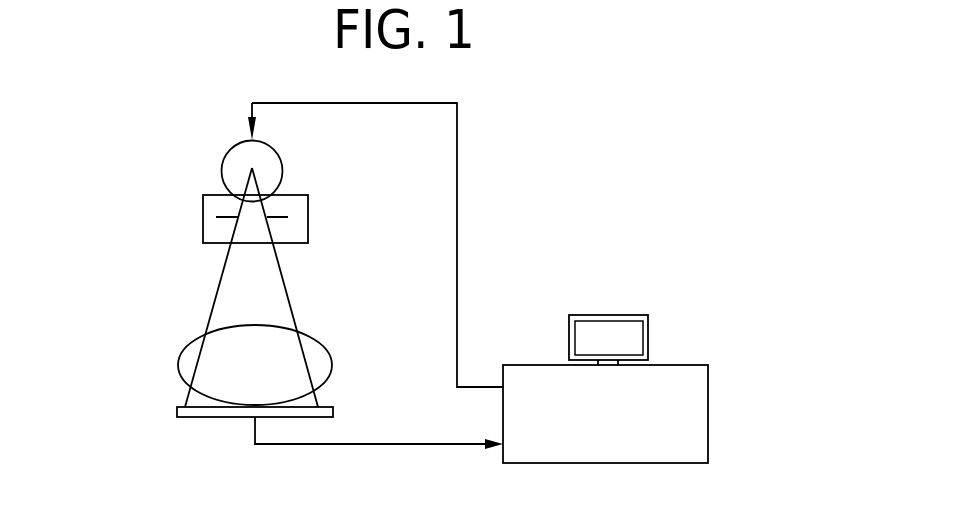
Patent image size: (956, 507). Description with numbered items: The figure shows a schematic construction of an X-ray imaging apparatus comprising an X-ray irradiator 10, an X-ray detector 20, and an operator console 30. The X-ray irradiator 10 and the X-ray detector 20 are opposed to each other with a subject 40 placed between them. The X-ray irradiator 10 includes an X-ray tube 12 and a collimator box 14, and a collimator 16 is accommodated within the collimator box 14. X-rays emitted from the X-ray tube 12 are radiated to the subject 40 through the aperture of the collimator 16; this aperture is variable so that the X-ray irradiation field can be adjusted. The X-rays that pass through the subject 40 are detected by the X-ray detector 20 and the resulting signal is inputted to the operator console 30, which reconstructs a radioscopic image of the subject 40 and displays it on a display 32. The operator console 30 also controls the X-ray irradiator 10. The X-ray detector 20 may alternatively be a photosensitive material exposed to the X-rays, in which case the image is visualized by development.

The X-ray irradiator 10 is at (200, 266).
The X-ray tube 12 is at (223, 170).
The collimator box 14 is at (203, 207).
The collimator 16 is at (279, 215).
The X-ray detector 20 is at (177, 407).
The operator console 30 is at (708, 410).
The display 32 is at (648, 315).
The subject 40 is at (313, 338).